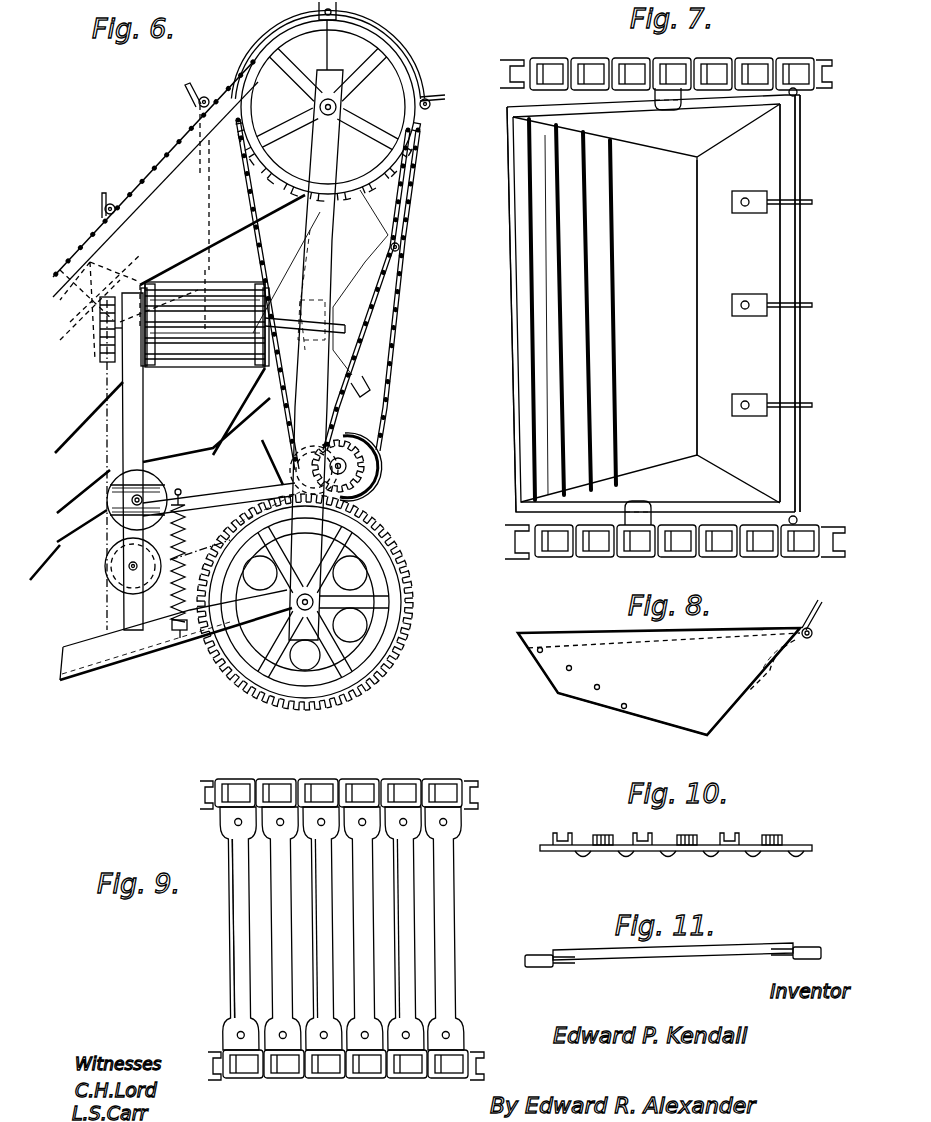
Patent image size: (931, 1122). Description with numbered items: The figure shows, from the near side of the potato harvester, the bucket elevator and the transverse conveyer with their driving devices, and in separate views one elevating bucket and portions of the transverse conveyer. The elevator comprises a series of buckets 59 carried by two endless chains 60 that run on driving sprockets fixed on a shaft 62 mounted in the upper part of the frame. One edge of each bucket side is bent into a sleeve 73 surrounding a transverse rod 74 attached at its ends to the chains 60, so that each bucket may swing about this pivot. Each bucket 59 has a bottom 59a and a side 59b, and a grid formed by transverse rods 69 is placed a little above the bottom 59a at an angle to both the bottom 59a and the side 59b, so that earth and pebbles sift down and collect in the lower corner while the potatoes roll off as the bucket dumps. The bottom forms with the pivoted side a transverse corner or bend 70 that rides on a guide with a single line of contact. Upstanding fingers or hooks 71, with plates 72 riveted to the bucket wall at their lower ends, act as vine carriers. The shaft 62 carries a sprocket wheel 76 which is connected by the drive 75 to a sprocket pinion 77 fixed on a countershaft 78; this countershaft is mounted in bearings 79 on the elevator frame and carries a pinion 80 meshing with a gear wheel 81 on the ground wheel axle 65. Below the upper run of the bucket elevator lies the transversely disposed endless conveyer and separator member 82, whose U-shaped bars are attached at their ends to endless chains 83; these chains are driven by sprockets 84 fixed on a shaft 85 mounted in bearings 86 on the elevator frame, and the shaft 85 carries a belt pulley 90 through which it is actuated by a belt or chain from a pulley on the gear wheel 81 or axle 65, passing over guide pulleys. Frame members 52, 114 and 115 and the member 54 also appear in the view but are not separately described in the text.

In FIG. 6, the sprocket wheel 76 is at (372, 58).
In FIG. 6, the shaft 62 is at (337, 107).
In FIG. 6, the supporting arm 54 is at (318, 214).
In FIG. 6, the endless chains 60 is at (150, 177).
In FIG. 7, the endless chains 60 is at (757, 58).
In FIG. 6, the drive connection 75 is at (399, 335).
In FIG. 6, the fingers or hooks 71 is at (103, 205).
In FIG. 7, the fingers or hooks 71 is at (798, 203).
In FIG. 8, the fingers or hooks 71 is at (806, 612).
In FIG. 6, the transverse rod 74 is at (207, 97).
In FIG. 7, the transverse rod 74 is at (800, 525).
In FIG. 6, the bucket 59 is at (200, 168).
In FIG. 7, the bucket 59 is at (507, 197).
In FIG. 8, the bucket 59 is at (659, 684).
In FIG. 7, the bucket bottom 59a is at (666, 307).
In FIG. 8, the bucket bottom 59a is at (598, 700).
In FIG. 7, the bucket side 59b is at (512, 282).
In FIG. 8, the bucket side 59b is at (532, 655).
In FIG. 6, the frame bar 115 is at (235, 232).
In FIG. 6, the frame brace 114 is at (165, 263).
In FIG. 6, the conveyer and separator member 82 is at (210, 368).
In FIG. 9, the conveyer and separator member 82 is at (322, 779).
In FIG. 10, the conveyer and separator member 82 is at (735, 852).
In FIG. 6, the sprockets 84 is at (146, 368).
In FIG. 6, the shaft 85 is at (292, 318).
In FIG. 6, the bearings 86 is at (110, 378).
In FIG. 6, the belt pulley 90 is at (100, 350).
In FIG. 6, the frame member 52 is at (88, 428).
In FIG. 6, the ground wheel axle 65 is at (296, 602).
In FIG. 6, the gear wheel 81 is at (409, 585).
In FIG. 6, the sprocket pinion 77 is at (366, 452).
In FIG. 6, the countershaft 78 is at (347, 466).
In FIG. 6, the bearings 79 is at (370, 478).
In FIG. 6, the pinion 80 is at (360, 490).
In FIG. 7, the transverse rods 69 is at (592, 240).
In FIG. 8, the transverse rods 69 is at (572, 668).
In FIG. 7, the plates 72 is at (741, 214).
In FIG. 8, the plates 72 is at (758, 688).
In FIG. 7, the sleeve 73 is at (808, 352).
In FIG. 8, the sleeve 73 is at (812, 635).
In FIG. 8, the transverse corner or bend 70 is at (753, 692).
In FIG. 9, the endless chains 83 is at (418, 770).
In FIG. 10, the endless chains 83 is at (628, 856).
In FIG. 11, the endless chains 83 is at (540, 968).